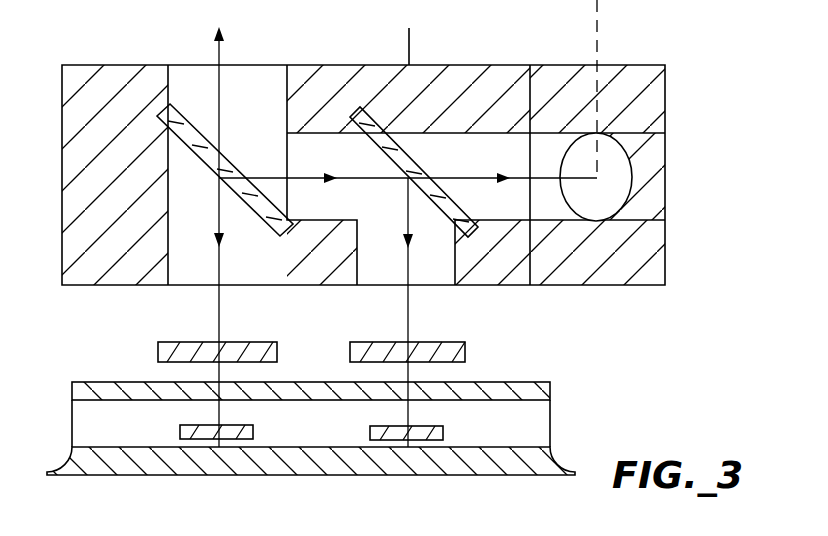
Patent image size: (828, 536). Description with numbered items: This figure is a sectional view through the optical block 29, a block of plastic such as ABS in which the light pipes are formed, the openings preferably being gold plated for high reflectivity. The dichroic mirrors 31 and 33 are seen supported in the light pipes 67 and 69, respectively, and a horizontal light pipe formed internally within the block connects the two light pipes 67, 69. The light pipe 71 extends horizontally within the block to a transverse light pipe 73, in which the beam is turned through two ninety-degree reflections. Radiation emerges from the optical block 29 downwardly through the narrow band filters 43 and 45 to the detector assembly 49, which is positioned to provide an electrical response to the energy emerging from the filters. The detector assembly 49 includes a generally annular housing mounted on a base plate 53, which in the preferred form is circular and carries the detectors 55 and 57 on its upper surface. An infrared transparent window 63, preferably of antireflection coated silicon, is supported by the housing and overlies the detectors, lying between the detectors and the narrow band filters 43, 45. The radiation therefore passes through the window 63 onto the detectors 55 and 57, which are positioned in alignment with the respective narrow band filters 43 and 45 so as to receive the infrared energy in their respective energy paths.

The optical block 29 is at (453, 62).
The dichroic mirror 31 is at (215, 144).
The dichroic mirror 33 is at (418, 167).
The narrow band filter 43 is at (202, 340).
The narrow band filter 45 is at (380, 340).
The detector assembly 49 is at (558, 412).
The base plate 53 is at (360, 476).
The detector 55 is at (240, 425).
The detector 57 is at (437, 426).
The infrared transparent window 63 is at (486, 382).
The light pipe 67 is at (170, 96).
The light pipe 69 is at (452, 266).
The light pipe 71 is at (506, 140).
The transverse light pipe 73 is at (622, 160).